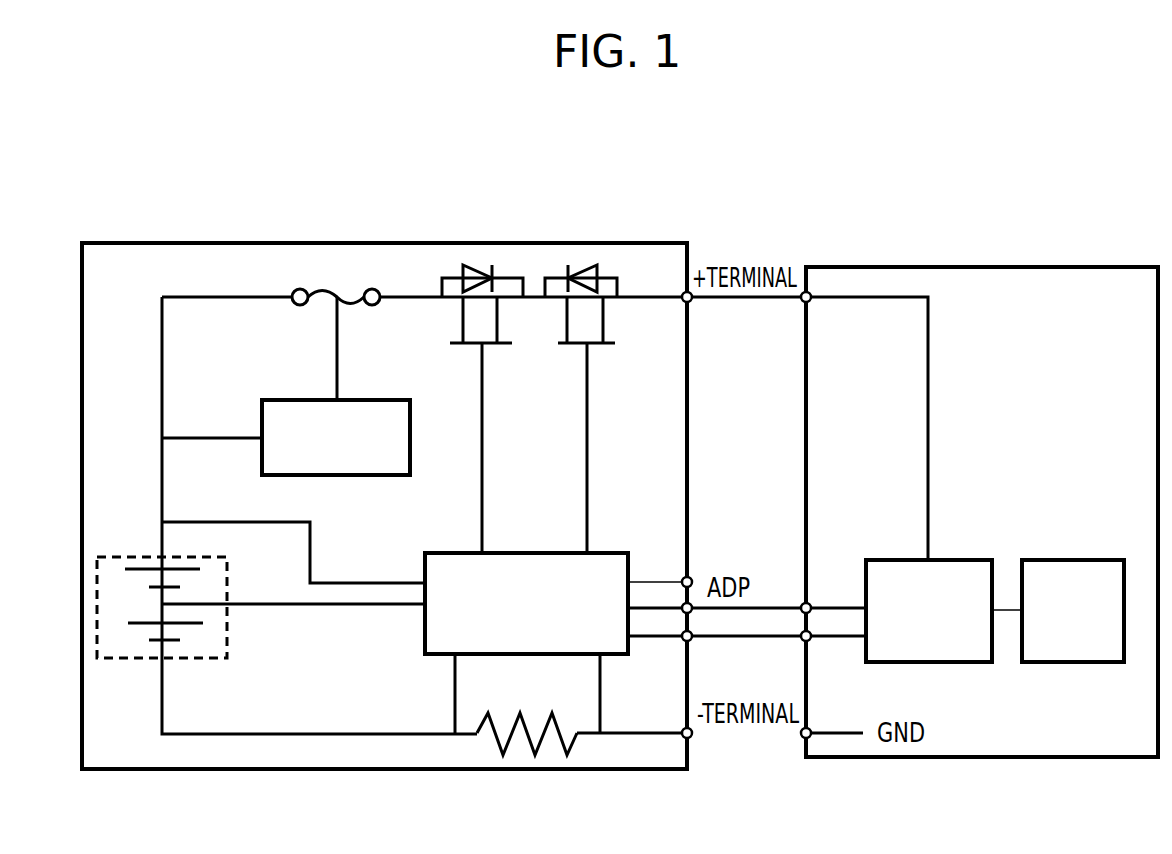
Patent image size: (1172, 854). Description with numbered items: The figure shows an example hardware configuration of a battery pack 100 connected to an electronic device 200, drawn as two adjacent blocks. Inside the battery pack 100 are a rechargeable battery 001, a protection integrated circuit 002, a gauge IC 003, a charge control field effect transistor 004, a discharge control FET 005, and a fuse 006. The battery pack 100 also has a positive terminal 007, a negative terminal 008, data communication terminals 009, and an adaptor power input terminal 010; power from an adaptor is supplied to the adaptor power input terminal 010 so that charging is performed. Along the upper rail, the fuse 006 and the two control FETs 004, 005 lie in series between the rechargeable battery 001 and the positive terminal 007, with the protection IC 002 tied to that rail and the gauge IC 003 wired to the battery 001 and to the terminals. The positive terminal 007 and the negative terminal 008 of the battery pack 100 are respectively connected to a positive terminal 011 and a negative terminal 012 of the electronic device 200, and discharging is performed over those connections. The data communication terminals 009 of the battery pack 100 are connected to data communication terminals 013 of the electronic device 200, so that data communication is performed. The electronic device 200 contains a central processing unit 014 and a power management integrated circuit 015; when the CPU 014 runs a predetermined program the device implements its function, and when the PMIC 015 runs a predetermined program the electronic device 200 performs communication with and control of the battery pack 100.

The battery pack 100 is at (135, 243).
The electronic device 200 is at (1037, 267).
The rechargeable battery 001 is at (112, 557).
The protection integrated circuit 002 is at (372, 400).
The gauge IC 003 is at (497, 553).
The charge control field effect transistor 004 is at (480, 265).
The discharge control FET 005 is at (592, 265).
The fuse 006 is at (330, 290).
The positive terminal 007 is at (684, 302).
The negative terminal 008 is at (684, 740).
The data communication terminals 009 is at (683, 641).
The adaptor power input terminal 010 is at (690, 578).
The positive terminal 011 is at (803, 740).
The negative terminal 012 is at (803, 302).
The data communication terminals 013 is at (802, 641).
The central processing unit 014 is at (1042, 560).
The power management integrated circuit 015 is at (942, 560).